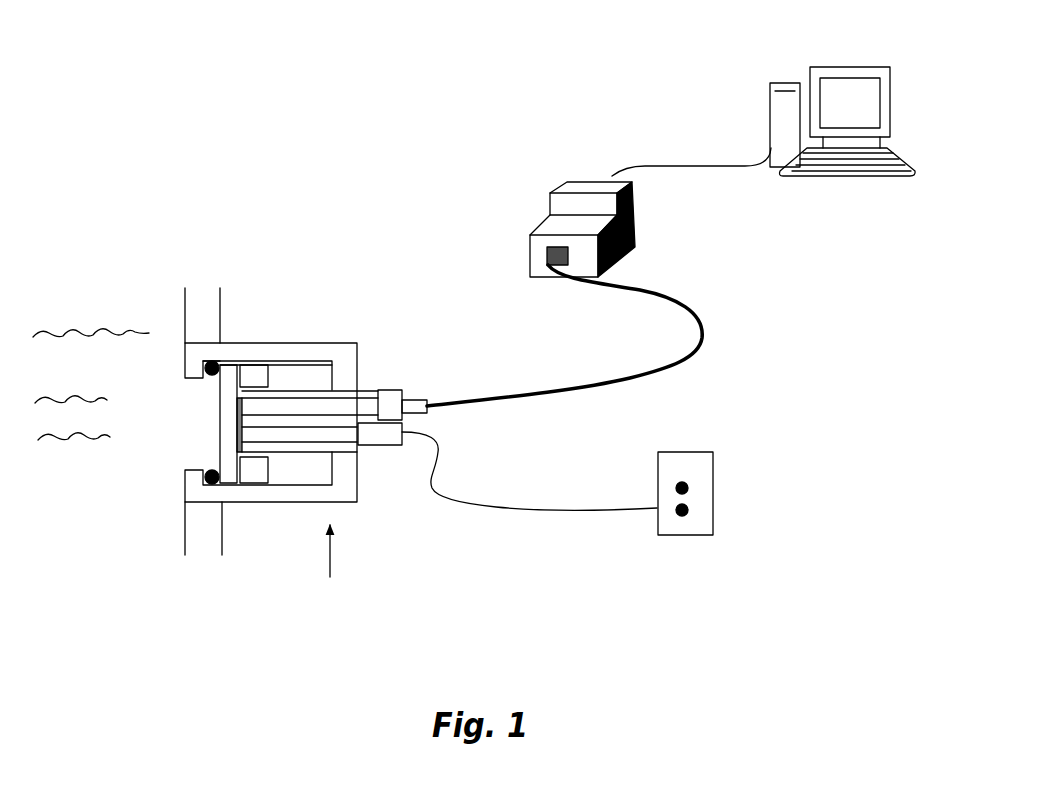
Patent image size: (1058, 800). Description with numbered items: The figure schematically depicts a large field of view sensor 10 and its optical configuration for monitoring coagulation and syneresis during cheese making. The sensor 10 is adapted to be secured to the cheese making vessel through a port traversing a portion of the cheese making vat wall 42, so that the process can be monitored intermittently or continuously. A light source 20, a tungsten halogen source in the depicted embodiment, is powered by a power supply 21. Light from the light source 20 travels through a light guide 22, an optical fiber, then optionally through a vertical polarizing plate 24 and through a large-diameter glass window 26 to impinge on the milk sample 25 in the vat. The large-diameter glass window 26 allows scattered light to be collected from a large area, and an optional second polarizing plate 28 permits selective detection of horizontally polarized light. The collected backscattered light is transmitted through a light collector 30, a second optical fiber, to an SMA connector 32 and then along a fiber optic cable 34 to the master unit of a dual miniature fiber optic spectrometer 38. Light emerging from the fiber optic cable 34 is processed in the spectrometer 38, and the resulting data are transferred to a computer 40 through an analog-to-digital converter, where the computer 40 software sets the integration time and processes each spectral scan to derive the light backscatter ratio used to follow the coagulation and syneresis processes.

The large field of view (LFV) sensor 10 is at (345, 160).
The light source 20 is at (372, 452).
The power supply 21 is at (728, 480).
The light guide 22 is at (330, 437).
The vertical polarizing plate 24 is at (237, 433).
The milk sample 25 is at (100, 370).
The large-diameter glass window 26 is at (228, 468).
The second polarizing plate 28 is at (241, 398).
The light collector 30 is at (287, 402).
The SMA connector 32 is at (396, 388).
The fiber optic cable 34 is at (705, 327).
The dual miniature fiber optic spectrometer 38 is at (572, 178).
The computer 40 is at (778, 80).
The cheese making vat wall 42 is at (200, 287).